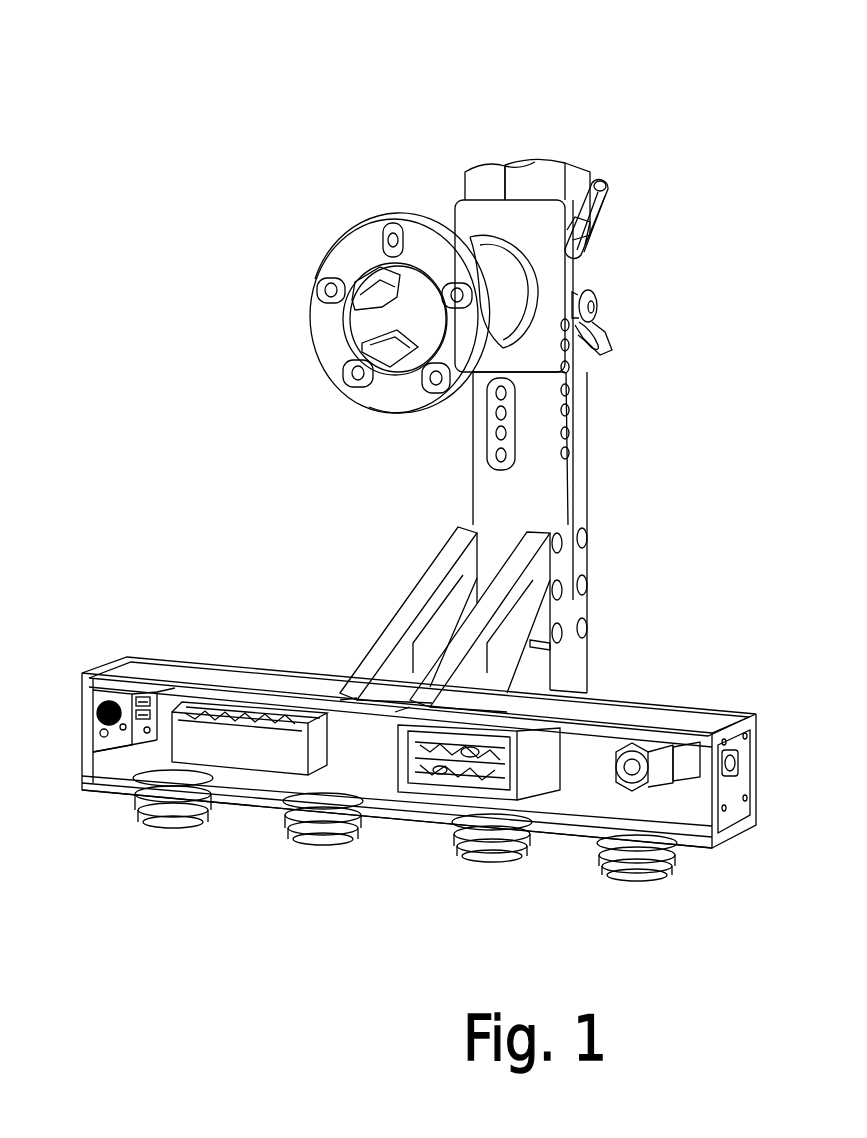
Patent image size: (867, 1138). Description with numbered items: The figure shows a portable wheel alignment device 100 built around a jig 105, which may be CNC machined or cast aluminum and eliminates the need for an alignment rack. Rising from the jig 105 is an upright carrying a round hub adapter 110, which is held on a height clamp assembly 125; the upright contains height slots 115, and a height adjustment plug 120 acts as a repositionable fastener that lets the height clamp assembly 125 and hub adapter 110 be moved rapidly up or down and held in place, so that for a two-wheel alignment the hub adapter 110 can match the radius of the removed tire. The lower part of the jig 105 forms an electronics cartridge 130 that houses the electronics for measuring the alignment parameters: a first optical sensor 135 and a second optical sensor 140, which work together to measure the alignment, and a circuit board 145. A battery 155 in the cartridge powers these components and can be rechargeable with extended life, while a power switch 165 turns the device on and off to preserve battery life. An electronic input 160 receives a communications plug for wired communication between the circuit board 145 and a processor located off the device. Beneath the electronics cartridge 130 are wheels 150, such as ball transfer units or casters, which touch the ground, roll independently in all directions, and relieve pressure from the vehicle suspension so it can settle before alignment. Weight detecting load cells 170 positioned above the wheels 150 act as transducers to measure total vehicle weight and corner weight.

The wheel alignment device 100 is at (732, 98).
The jig 105 is at (583, 418).
The hub adapter 110 is at (308, 297).
The height slots 115 is at (562, 257).
The height adjustment plug 120 is at (607, 300).
The height clamp assembly 125 is at (555, 490).
The electronics cartridge 130 is at (640, 672).
The first optical sensor 135 is at (720, 770).
The second optical sensor 140 is at (635, 777).
The circuit board 145 is at (450, 760).
The wheels 150 is at (327, 845).
The battery 155 is at (255, 747).
The electronic input 160 is at (100, 707).
The power switch 165 is at (143, 700).
The weight detecting load cells 170 is at (677, 853).